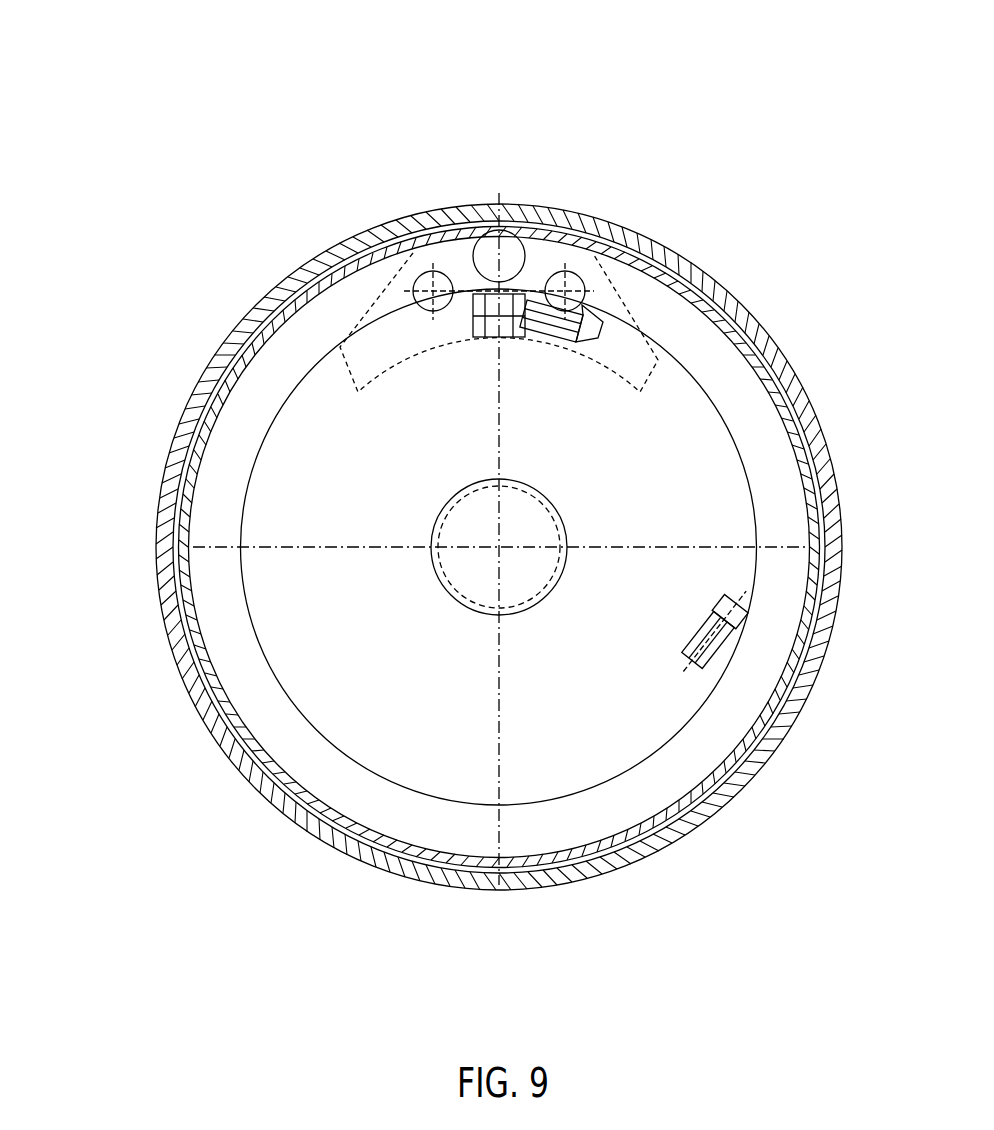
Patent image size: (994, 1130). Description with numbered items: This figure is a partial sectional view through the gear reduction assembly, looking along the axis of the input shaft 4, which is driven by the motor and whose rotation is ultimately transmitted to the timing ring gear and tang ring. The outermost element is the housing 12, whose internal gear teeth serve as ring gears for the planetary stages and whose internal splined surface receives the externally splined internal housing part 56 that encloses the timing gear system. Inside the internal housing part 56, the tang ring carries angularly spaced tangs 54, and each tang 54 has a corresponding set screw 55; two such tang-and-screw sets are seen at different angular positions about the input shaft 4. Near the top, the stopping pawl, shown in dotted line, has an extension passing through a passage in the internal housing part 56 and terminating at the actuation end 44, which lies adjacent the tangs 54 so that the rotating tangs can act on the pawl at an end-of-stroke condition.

The input shaft 4 is at (543, 512).
The housing 12 is at (292, 270).
The actuation end 44 is at (482, 292).
The tang 54 is at (573, 342).
The set screw 55 is at (605, 333).
The internal housing part 56 is at (252, 337).